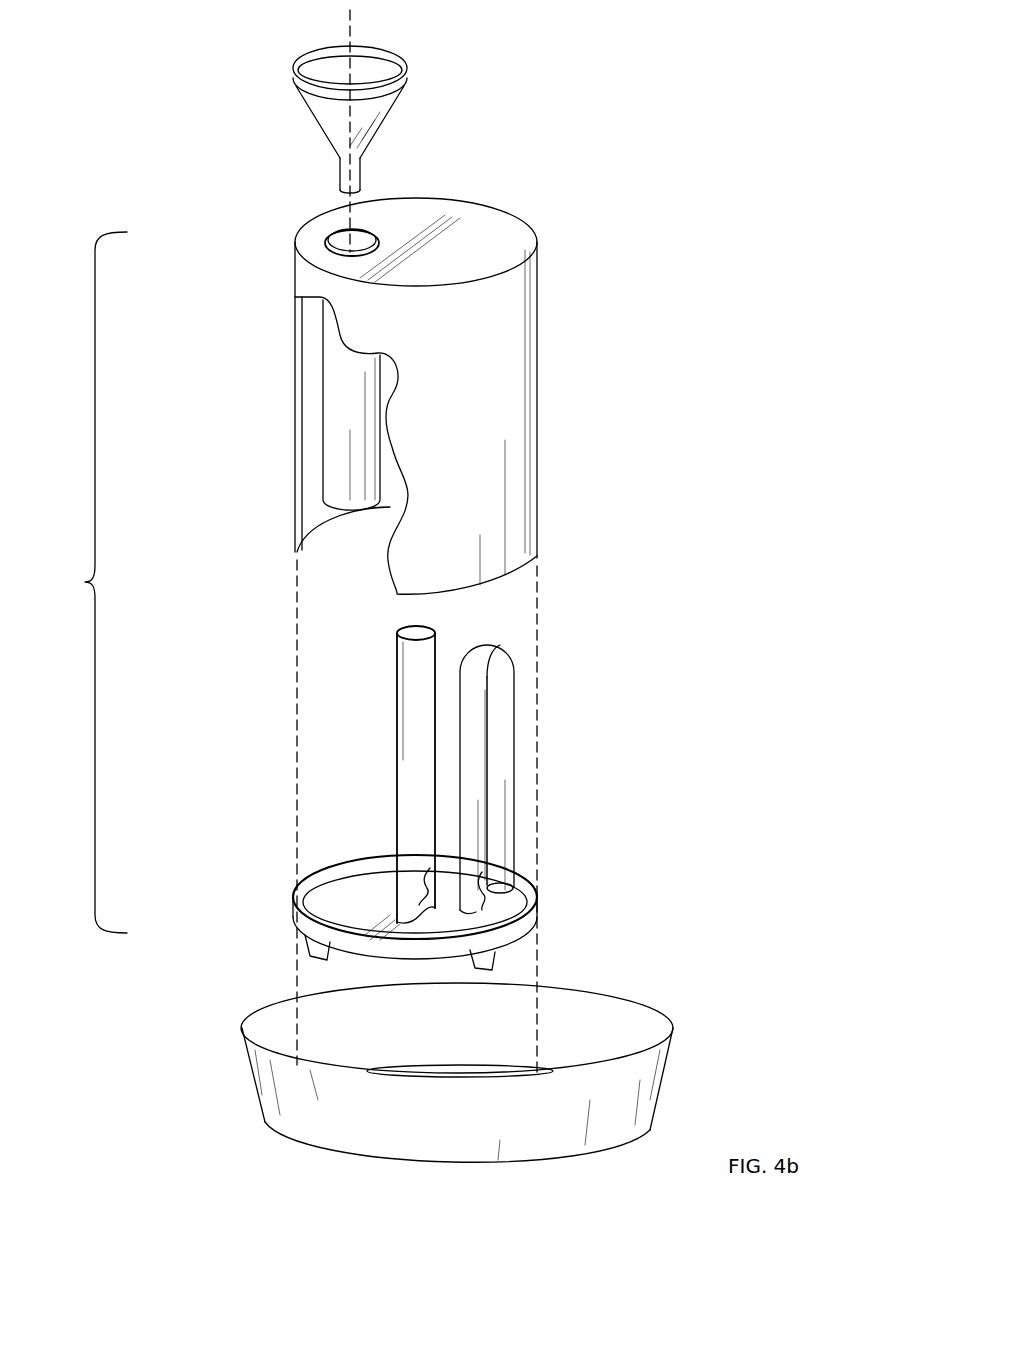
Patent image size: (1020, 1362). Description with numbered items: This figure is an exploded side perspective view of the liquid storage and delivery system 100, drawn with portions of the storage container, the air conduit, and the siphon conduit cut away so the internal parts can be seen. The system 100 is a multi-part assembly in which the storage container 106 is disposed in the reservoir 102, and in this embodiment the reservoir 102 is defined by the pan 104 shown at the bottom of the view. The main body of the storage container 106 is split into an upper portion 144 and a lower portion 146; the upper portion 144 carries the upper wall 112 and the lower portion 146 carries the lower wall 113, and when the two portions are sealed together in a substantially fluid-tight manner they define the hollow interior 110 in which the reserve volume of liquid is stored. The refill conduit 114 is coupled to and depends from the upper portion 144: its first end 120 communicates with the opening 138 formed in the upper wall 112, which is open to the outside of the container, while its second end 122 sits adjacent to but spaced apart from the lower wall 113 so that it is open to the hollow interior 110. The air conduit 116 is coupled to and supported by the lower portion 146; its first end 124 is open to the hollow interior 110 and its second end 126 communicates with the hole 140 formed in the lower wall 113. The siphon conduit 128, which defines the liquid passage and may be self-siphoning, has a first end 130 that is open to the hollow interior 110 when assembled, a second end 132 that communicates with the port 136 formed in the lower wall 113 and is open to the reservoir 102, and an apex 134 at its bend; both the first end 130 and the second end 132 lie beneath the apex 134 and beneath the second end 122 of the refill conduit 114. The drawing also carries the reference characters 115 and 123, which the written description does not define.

The liquid storage and delivery system 100 is at (575, 118).
The reservoir 102 is at (230, 1020).
The pan 104 is at (665, 1073).
The storage container 106 is at (84, 582).
The hollow interior 110 is at (346, 544).
The upper wall 112 is at (484, 236).
The lower wall 113 is at (346, 956).
The refill conduit 114 is at (337, 398).
The inner surface 115 is at (395, 426).
The air conduit 116 is at (397, 762).
The first end of the refill conduit 120 is at (363, 234).
The second end of the refill conduit 122 is at (357, 480).
The funnel 123 is at (385, 112).
The first end of the air conduit 124 is at (437, 632).
The second end of the air conduit 126 is at (397, 852).
The siphon conduit 128 is at (502, 702).
The first end of the siphon conduit 130 is at (515, 862).
The second end of the siphon conduit 132 is at (490, 888).
The apex 134 is at (495, 643).
The port 136 is at (502, 942).
The opening 138 is at (330, 238).
The hole 140 is at (437, 925).
The upper portion 144 is at (490, 358).
The lower portion 146 is at (505, 962).